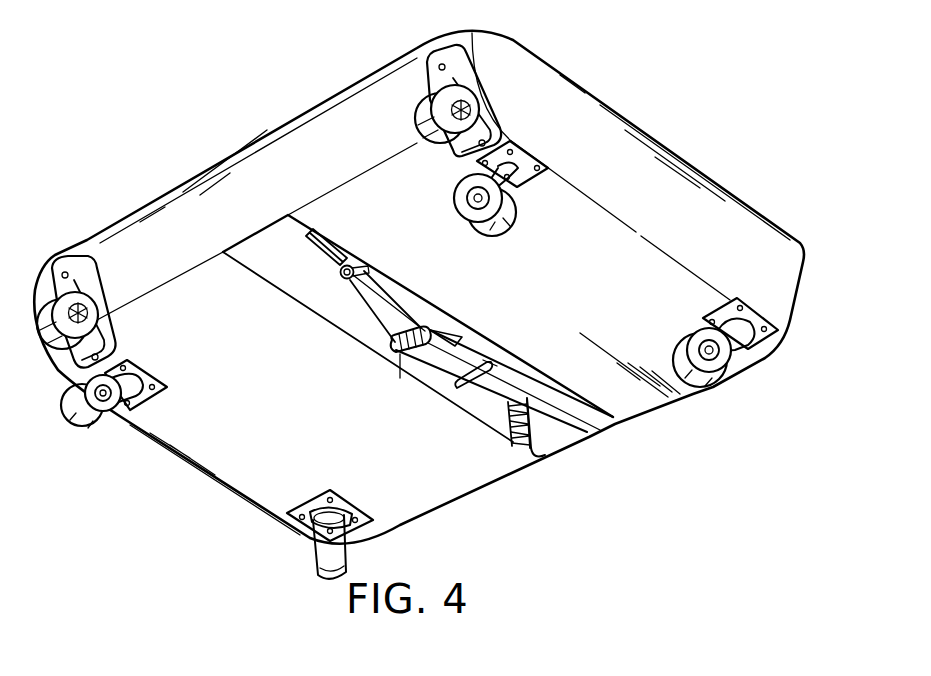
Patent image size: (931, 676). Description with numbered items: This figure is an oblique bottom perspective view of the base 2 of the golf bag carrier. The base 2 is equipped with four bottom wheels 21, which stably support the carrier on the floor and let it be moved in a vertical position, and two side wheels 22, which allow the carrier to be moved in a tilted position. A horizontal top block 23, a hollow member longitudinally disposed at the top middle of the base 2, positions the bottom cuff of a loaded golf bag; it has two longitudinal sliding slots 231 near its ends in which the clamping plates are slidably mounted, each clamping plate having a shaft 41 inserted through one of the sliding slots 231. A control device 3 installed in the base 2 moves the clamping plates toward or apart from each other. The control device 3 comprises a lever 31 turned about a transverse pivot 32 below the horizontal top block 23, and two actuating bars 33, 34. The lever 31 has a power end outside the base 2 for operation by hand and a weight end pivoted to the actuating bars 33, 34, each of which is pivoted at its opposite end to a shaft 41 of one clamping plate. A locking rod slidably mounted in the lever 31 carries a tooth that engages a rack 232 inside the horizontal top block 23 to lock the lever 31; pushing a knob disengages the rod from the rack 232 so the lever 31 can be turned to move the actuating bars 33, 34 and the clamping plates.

The base 2 is at (226, 163).
The control device 3 is at (413, 318).
The bottom wheels 21 is at (701, 386).
The side wheels 22 is at (426, 112).
The horizontal top block 23 is at (490, 407).
The lever 31 is at (585, 426).
The transverse pivot 32 is at (480, 371).
The actuating bar 33 is at (384, 306).
The actuating bar 34 is at (447, 334).
The shaft 41 is at (350, 263).
The longitudinal sliding slots 231 is at (321, 235).
The rack 232 is at (519, 440).